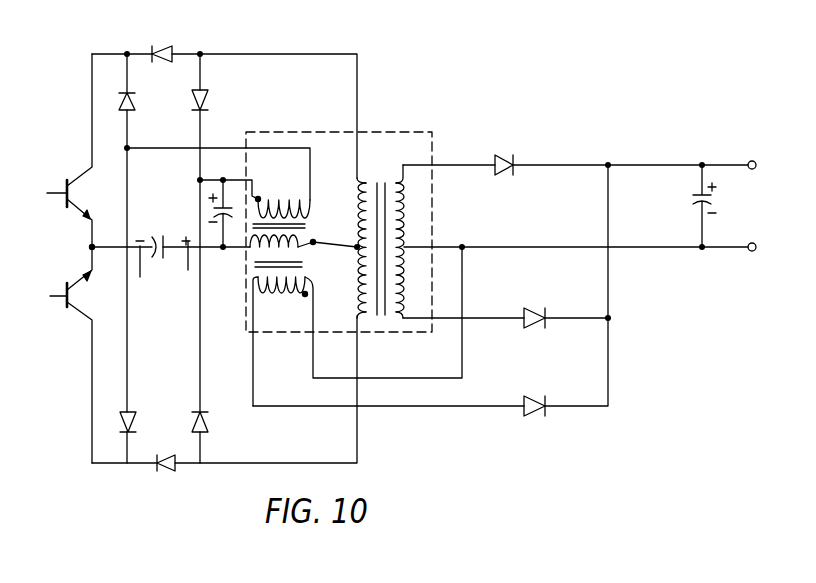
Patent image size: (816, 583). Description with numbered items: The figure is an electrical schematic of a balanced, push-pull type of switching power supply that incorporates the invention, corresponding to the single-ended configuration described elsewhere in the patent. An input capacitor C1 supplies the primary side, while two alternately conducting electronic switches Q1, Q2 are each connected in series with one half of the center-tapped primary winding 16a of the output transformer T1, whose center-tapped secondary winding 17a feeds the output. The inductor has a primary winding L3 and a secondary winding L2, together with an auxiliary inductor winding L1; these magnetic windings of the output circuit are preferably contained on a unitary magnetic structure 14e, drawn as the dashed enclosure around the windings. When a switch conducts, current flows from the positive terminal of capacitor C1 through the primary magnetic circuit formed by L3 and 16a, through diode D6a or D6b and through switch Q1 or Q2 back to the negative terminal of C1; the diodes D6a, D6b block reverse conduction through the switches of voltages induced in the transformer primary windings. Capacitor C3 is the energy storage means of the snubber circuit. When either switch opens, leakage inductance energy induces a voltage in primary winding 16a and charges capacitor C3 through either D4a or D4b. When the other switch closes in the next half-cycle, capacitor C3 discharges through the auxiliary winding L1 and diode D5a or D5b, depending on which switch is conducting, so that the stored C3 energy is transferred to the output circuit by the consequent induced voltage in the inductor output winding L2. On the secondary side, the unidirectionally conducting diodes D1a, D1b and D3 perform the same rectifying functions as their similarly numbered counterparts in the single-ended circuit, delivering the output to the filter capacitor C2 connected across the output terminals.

The electronic switch Q1 is at (67, 196).
The electronic switch Q2 is at (67, 292).
The diode D6a is at (158, 48).
The diode D5a is at (118, 101).
The diode D4a is at (208, 103).
The diode D5b is at (120, 426).
The diode D4b is at (212, 424).
The diode D6b is at (165, 472).
The diode D1a is at (515, 151).
The diode D1b is at (536, 304).
The diode D3 is at (539, 424).
The capacitor C1 is at (163, 243).
The capacitor C3 is at (212, 212).
The capacitor C2 is at (686, 206).
The unitary magnetic structure 14e is at (392, 130).
The auxiliary inductor winding L1 is at (283, 195).
The inductor primary winding L3 is at (313, 238).
The inductor secondary winding L2 is at (283, 294).
The output transformer T1 is at (427, 261).
The transformer primary winding 16a is at (373, 316).
The transformer secondary winding 17a is at (413, 214).